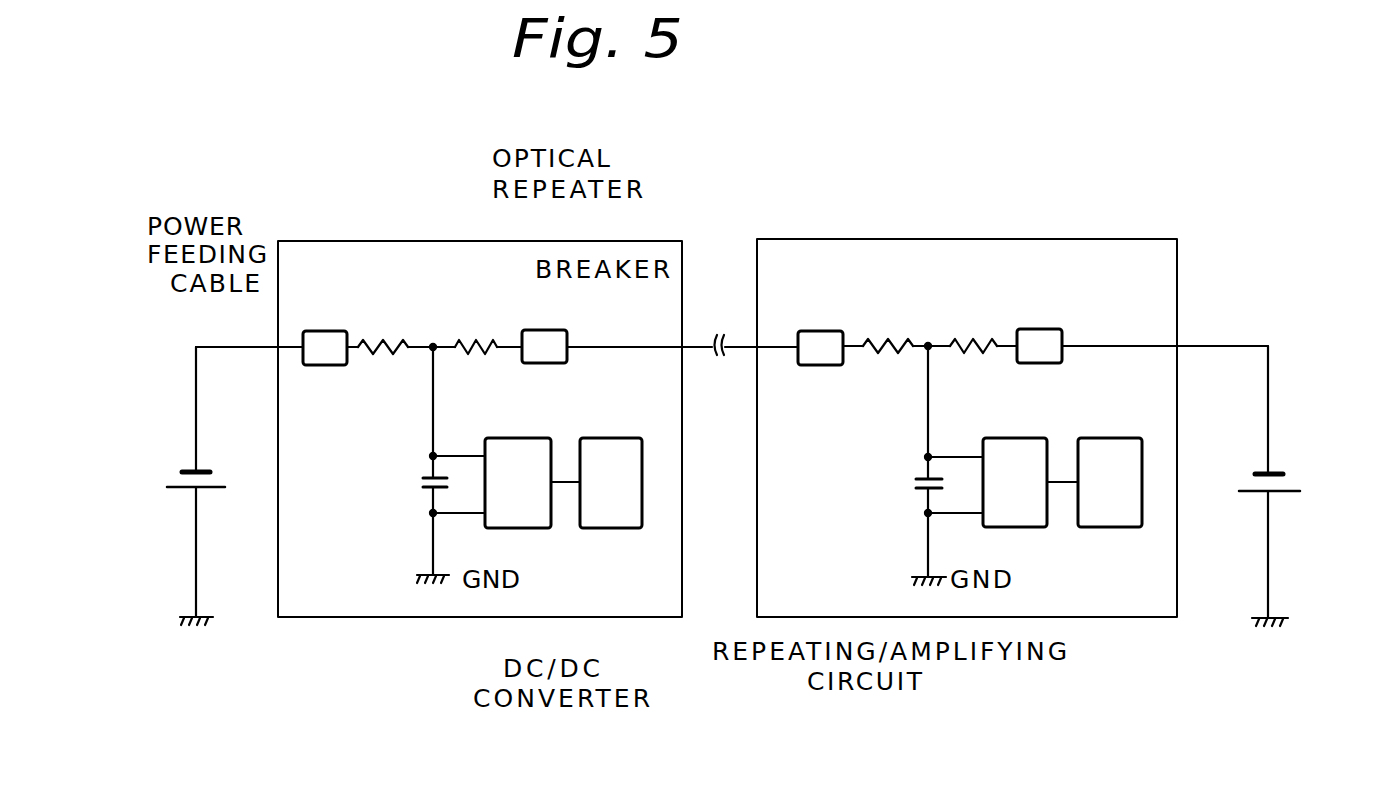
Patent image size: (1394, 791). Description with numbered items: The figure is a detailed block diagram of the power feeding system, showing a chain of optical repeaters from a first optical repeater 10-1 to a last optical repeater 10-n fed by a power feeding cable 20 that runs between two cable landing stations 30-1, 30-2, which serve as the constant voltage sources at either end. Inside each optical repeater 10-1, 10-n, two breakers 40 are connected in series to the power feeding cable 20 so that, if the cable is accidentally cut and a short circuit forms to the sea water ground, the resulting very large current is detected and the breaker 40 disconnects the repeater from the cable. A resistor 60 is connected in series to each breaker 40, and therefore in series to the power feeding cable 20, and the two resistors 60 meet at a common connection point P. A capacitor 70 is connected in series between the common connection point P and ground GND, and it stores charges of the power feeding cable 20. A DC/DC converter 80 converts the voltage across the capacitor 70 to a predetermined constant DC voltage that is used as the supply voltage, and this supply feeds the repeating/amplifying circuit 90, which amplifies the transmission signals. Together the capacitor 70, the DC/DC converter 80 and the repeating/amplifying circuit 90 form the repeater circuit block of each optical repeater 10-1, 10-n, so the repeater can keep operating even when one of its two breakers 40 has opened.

The optical repeater 10-1 is at (514, 241).
The optical repeater 10-n is at (985, 239).
The power feeding cable 20 is at (237, 347).
The cable landing station 30-1 is at (175, 477).
The cable landing station 30-2 is at (1278, 462).
The breaker 40 is at (338, 331).
The resistor 60 is at (392, 339).
The capacitor 70 is at (420, 484).
The DC/DC converter 80 is at (550, 645).
The repeating/amplifying circuit 90 is at (707, 642).
The common connection point P is at (434, 345).